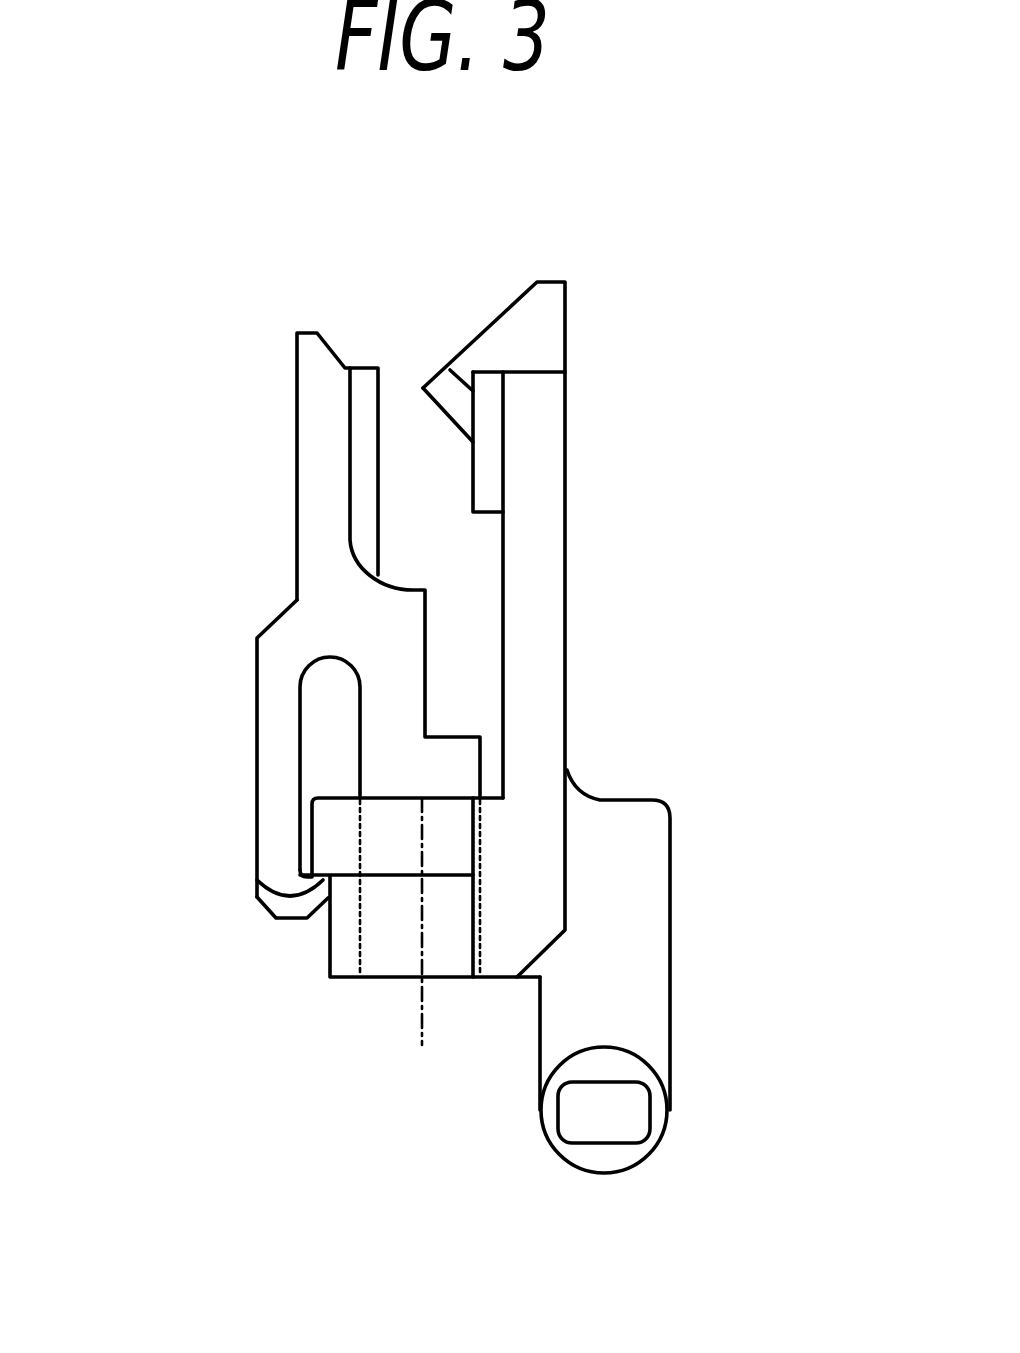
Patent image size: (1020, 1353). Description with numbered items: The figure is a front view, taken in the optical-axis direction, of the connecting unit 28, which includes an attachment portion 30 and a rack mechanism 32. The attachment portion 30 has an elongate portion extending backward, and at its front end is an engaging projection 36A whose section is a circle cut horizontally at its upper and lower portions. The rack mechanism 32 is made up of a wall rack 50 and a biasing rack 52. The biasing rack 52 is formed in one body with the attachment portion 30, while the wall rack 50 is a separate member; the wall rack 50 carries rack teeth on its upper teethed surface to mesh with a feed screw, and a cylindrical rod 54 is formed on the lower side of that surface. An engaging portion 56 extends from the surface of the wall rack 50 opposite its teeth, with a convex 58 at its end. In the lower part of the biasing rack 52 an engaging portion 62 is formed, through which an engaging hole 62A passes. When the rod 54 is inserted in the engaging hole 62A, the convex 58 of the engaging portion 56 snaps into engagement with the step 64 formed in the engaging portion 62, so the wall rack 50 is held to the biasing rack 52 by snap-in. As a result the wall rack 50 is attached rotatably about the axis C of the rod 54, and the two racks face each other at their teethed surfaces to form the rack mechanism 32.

The connecting unit 28 is at (717, 453).
The attachment portion 30 is at (722, 1000).
The rack mechanism 32 is at (215, 490).
The engaging projection 36A is at (607, 1123).
The wall rack 50 is at (316, 400).
The biasing rack 52 is at (548, 395).
The cylindrical rod 54 is at (383, 943).
The engaging portion 56 is at (262, 748).
The convex 58 is at (305, 863).
The engaging portion 62 is at (455, 815).
The engaging hole 62A is at (362, 967).
The step 64 is at (258, 882).
The axis C is at (423, 1073).